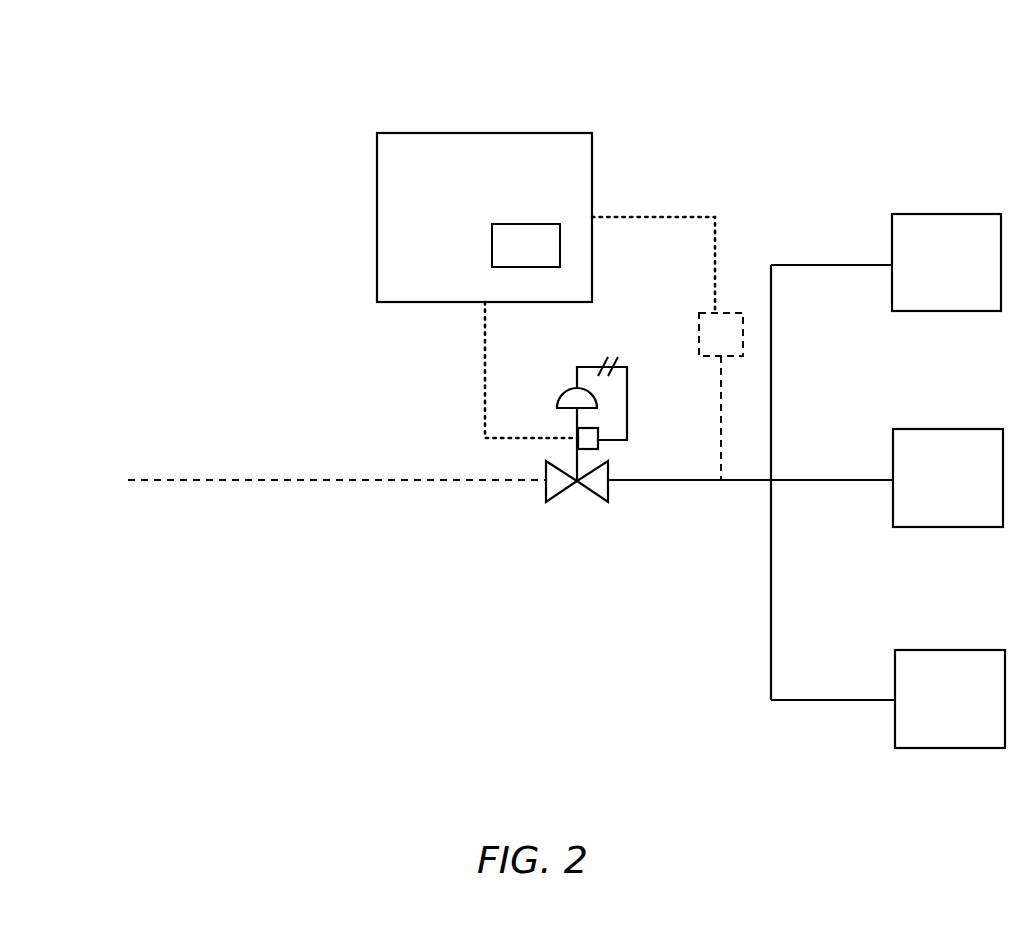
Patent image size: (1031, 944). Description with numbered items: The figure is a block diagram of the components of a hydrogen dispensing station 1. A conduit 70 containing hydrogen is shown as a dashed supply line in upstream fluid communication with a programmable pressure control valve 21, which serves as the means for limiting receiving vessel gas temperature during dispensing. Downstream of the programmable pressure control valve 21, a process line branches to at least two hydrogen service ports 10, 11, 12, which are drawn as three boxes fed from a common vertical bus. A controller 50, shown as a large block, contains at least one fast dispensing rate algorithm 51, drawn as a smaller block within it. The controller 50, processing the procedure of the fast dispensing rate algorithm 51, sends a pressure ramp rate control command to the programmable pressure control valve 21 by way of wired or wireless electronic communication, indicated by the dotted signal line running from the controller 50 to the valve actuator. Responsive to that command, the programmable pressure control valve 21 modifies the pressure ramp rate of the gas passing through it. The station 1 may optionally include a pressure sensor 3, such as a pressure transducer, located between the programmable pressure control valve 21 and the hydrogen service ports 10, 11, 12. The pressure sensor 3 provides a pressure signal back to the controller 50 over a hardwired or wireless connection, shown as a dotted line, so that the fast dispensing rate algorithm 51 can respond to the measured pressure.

The hydrogen dispensing station 1 is at (706, 88).
The pressure sensor 3 is at (721, 396).
The hydrogen service port 10 is at (963, 277).
The hydrogen service port 11 is at (969, 491).
The hydrogen service port 12 is at (967, 714).
The programmable pressure control valve 21 is at (610, 472).
The controller 50 is at (437, 196).
The fast dispensing rate algorithm 51 is at (540, 262).
The conduit 70 is at (282, 480).